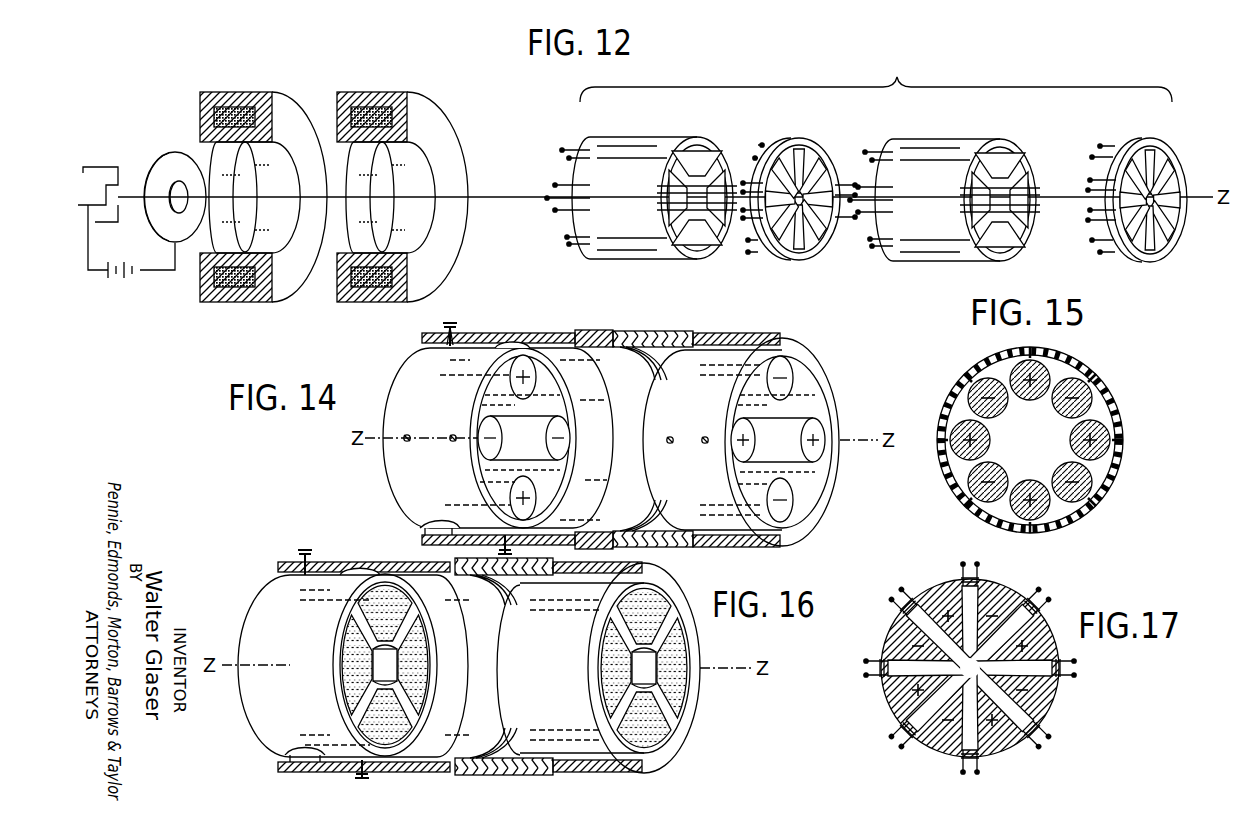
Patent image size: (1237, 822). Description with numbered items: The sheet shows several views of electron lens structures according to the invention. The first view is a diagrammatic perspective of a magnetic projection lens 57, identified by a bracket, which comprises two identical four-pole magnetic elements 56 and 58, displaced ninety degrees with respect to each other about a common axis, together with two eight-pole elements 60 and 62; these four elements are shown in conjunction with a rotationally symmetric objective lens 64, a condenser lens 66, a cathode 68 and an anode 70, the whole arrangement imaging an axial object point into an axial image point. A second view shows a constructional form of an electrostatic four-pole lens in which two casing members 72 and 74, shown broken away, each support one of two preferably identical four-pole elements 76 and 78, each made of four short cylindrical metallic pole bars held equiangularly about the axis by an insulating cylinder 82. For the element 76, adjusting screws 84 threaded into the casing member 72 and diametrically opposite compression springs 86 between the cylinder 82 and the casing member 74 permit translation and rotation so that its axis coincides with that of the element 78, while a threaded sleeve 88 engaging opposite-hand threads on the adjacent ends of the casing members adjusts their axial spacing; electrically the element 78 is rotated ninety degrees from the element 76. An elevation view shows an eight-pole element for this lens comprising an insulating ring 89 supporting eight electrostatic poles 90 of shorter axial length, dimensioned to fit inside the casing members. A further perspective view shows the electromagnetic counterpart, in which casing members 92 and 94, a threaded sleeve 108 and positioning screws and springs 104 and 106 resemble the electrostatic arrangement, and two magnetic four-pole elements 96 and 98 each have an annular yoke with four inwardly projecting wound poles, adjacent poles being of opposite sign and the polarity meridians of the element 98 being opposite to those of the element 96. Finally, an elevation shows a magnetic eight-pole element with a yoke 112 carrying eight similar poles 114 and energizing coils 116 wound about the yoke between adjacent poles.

In FIG. 12, the four-pole magnetic element 56 is at (697, 137).
In FIG. 12, the projection lens 57 is at (876, 77).
In FIG. 12, the four-pole magnetic element 58 is at (984, 137).
In FIG. 12, the eight-pole element 60 is at (805, 138).
In FIG. 12, the eight-pole element 62 is at (1165, 142).
In FIG. 12, the objective lens 64 is at (420, 112).
In FIG. 12, the condenser lens 66 is at (278, 104).
In FIG. 12, the cathode 68 is at (100, 172).
In FIG. 12, the anode 70 is at (174, 148).
In FIG. 14, the casing member 72 is at (568, 333).
In FIG. 14, the casing member 74 is at (733, 333).
In FIG. 14, the four-pole element 76 is at (475, 438).
In FIG. 14, the four-pole element 78 is at (726, 442).
In FIG. 14, the cylinder of insulating material 82 is at (443, 412).
In FIG. 14, the adjusting screws 84 is at (452, 325).
In FIG. 14, the compression springs 86 is at (515, 340).
In FIG. 14, the threaded sleeve 88 is at (648, 331).
In FIG. 15, the insulating ring 89 is at (1108, 385).
In FIG. 15, the electrostatic poles 90 is at (1002, 478).
In FIG. 16, the casing member 92 is at (404, 556).
In FIG. 16, the casing member 94 is at (616, 565).
In FIG. 16, the magnetic four-pole element 96 is at (335, 665).
In FIG. 16, the magnetic four-pole element 98 is at (585, 668).
In FIG. 16, the positioning screws 104 is at (304, 556).
In FIG. 16, the springs 106 is at (360, 572).
In FIG. 16, the threaded sleeve 108 is at (524, 566).
In FIG. 17, the yoke 112 is at (1052, 700).
In FIG. 17, the poles 114 is at (970, 668).
In FIG. 17, the energizing coils 116 is at (1042, 733).